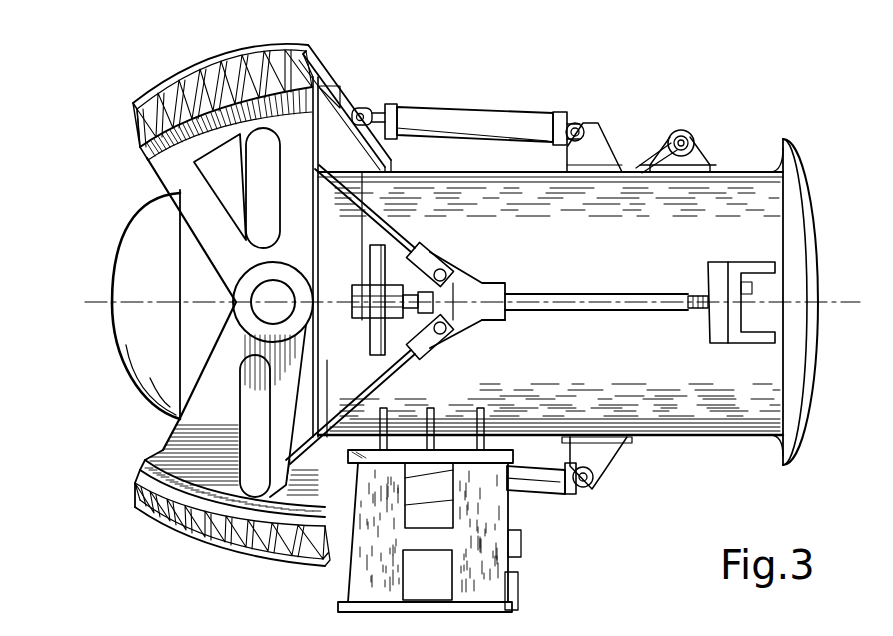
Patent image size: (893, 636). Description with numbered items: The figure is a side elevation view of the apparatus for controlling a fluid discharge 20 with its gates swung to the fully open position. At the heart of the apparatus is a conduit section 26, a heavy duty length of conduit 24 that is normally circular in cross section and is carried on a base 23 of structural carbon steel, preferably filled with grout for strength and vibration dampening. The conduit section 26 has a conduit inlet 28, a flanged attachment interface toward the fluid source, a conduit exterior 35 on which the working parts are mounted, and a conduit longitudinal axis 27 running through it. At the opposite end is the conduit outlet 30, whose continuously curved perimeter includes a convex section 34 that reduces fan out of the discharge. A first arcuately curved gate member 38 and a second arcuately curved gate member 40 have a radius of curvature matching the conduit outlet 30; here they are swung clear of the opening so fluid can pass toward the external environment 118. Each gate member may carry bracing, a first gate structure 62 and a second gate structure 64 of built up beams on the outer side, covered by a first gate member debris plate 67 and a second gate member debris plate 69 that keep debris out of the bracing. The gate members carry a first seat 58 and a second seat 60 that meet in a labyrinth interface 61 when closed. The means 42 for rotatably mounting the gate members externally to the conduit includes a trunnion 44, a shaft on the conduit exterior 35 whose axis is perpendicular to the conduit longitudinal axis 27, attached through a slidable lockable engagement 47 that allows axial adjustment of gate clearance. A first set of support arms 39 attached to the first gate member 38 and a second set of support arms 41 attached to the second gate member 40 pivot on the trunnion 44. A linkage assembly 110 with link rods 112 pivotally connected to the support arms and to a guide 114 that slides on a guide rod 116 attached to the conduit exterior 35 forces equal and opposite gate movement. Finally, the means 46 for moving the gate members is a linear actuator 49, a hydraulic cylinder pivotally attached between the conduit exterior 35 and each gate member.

The apparatus for controlling a fluid discharge 20 is at (126, 61).
The base 23 is at (517, 580).
The conduit 24 is at (120, 353).
The conduit section 26 is at (712, 440).
The conduit longitudinal axis 27 is at (100, 303).
The conduit inlet 28 is at (802, 152).
The conduit outlet 30 is at (140, 397).
The convex section 34 is at (117, 280).
The conduit exterior 35 is at (524, 229).
The first arcuately curved gate member 38 is at (138, 144).
The first set of support arms 39 is at (327, 105).
The second arcuately curved gate member 40 is at (143, 475).
The second set of support arms 41 is at (187, 452).
The means for rotatably mounting the gate members 42 is at (480, 320).
The trunnion 44 is at (253, 315).
The means for moving the gate members 46 is at (448, 106).
The slidable lockable engagement 47 is at (190, 263).
The linear actuator 49 is at (513, 110).
The first seat 58 is at (147, 157).
The second seat 60 is at (140, 462).
The labyrinth interface 61 is at (150, 163).
The first gate structure 62 is at (138, 128).
The second gate structure 64 is at (140, 483).
The first gate member debris plate 67 is at (212, 57).
The second gate member debris plate 69 is at (200, 540).
The linkage assembly 110 is at (472, 273).
The link rod 112 is at (387, 218).
The guide 114 is at (495, 320).
The guide rod 116 is at (618, 292).
The external environment 118 is at (269, 605).